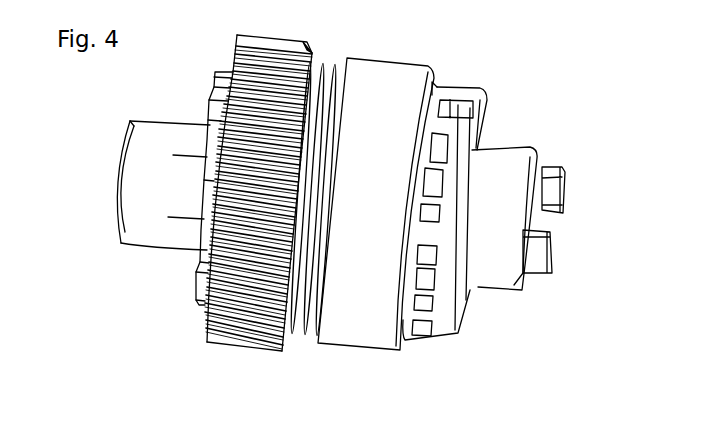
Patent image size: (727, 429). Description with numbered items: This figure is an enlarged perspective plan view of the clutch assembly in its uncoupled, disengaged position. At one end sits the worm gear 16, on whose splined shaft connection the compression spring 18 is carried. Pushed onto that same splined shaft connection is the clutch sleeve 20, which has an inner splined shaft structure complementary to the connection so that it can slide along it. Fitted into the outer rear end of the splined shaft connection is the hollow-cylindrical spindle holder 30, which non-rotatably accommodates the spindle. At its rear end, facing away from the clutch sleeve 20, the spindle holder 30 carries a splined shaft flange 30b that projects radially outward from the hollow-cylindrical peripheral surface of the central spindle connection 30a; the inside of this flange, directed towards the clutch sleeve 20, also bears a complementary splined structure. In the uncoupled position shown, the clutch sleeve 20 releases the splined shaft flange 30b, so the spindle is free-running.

The spindle holder 30 is at (531, 145).
The central spindle connection 30a is at (133, 221).
The splined shaft flange 30b is at (422, 313).
The worm gear 16 is at (227, 325).
The compression spring 18 is at (305, 325).
The clutch sleeve 20 is at (375, 315).